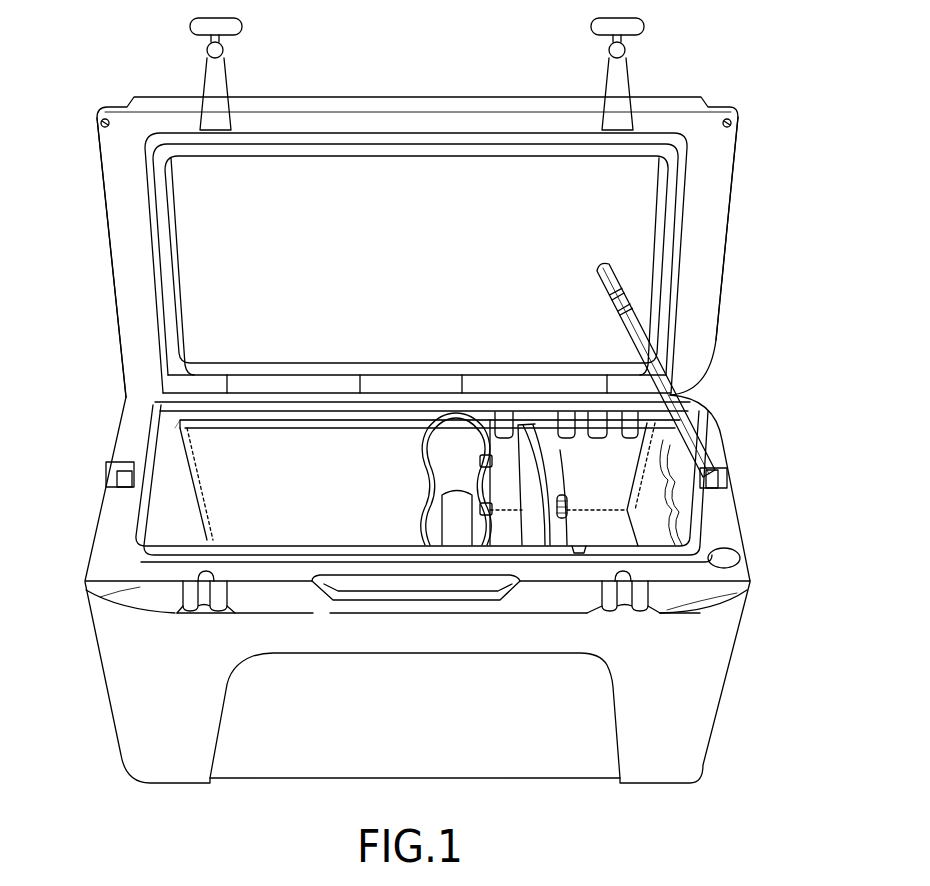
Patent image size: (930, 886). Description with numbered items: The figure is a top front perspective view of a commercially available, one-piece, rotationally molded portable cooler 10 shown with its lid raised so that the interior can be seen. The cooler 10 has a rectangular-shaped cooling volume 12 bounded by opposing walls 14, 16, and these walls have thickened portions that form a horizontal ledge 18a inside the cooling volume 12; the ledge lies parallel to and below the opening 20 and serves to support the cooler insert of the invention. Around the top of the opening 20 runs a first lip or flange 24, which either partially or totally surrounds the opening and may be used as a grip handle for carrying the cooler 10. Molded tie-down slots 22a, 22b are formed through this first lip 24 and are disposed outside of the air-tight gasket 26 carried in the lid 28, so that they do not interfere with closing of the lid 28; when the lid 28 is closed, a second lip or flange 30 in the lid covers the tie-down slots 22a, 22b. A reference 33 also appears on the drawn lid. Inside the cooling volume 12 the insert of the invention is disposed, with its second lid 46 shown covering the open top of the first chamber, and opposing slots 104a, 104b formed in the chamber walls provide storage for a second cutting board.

The portable cooler 10 is at (732, 414).
The cooling volume 12 is at (178, 477).
The opposing wall 14 is at (303, 479).
The opposing wall 16 is at (245, 545).
The horizontal ledge 18a is at (215, 424).
The opening 20 is at (178, 438).
The tie-down slot 22a is at (115, 475).
The tie-down slot 22b is at (722, 478).
The first lip or flange 24 is at (107, 517).
The air-tight gasket 26 is at (527, 122).
The lid 28 is at (732, 262).
The second lip or flange 30 is at (106, 237).
The lid corner 33 is at (730, 187).
The second lid 46 is at (627, 312).
The slot 104a is at (560, 450).
The slot 104b is at (578, 553).